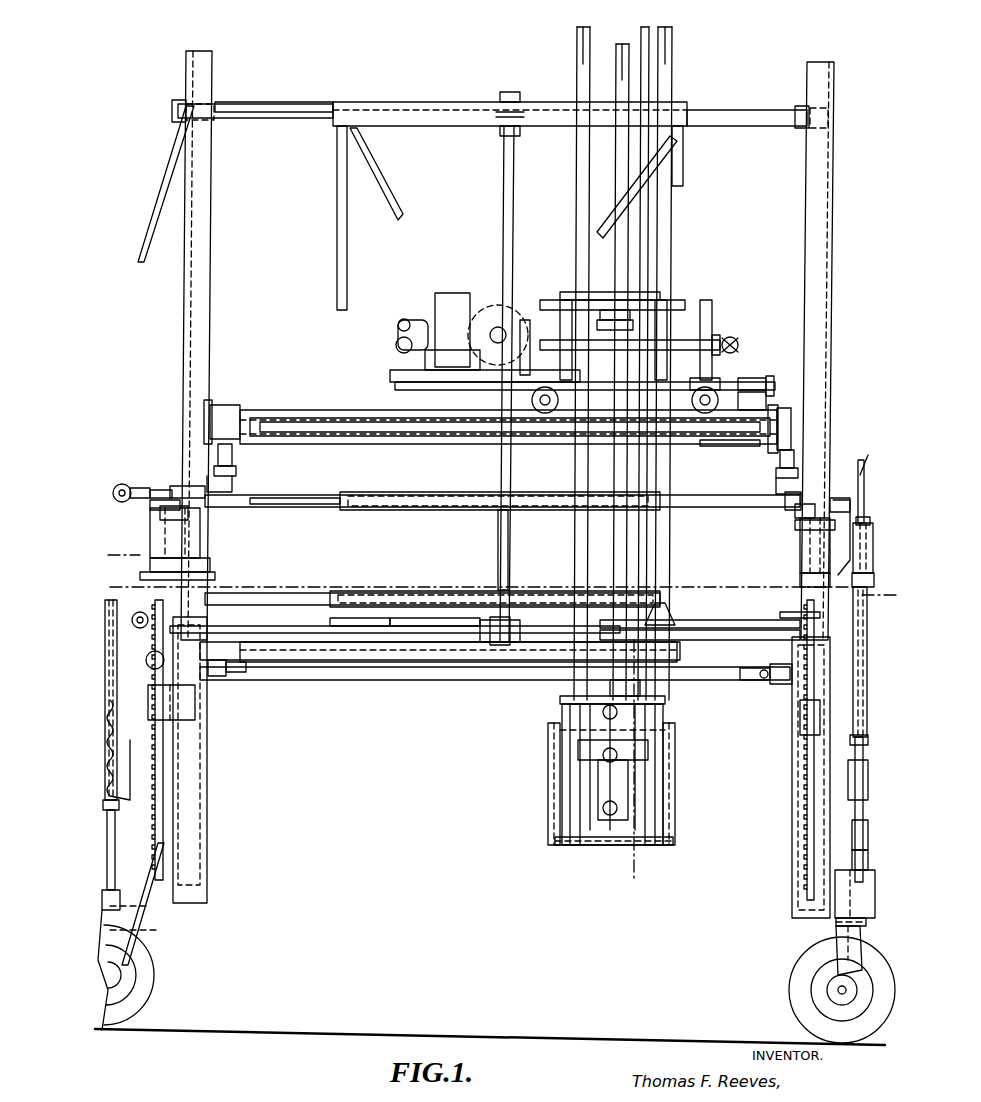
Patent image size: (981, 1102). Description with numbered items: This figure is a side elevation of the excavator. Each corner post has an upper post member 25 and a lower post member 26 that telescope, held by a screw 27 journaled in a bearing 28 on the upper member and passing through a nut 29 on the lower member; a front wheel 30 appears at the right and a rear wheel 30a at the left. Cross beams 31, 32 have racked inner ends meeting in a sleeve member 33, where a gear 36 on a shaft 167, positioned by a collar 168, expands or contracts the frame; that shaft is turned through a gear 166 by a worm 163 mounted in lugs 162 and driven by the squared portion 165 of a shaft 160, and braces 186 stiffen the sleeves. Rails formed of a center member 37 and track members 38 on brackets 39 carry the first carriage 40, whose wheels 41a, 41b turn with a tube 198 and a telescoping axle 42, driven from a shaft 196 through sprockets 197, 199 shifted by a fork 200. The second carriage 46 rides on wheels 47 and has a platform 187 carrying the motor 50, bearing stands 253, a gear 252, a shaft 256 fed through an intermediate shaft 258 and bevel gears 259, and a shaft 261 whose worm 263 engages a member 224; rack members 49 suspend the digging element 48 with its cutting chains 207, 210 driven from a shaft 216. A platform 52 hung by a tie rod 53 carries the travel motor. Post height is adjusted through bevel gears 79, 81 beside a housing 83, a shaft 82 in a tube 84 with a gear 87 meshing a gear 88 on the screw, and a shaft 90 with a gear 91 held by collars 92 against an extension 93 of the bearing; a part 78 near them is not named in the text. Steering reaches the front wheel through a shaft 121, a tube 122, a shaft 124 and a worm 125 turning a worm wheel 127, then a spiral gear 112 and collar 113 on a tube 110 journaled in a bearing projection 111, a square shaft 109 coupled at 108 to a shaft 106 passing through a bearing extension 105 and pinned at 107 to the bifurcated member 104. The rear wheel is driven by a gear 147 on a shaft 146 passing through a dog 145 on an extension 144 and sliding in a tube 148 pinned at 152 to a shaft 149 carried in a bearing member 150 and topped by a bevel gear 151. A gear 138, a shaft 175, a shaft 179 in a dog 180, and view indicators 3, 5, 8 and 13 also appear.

The section line 3 is at (118, 550).
The section line 5 is at (890, 590).
The section line 8- 8 is at (390, 510).
The center line 13 is at (652, 684).
The upper post member 25 is at (186, 316).
The lower post member 26 is at (207, 768).
The screw 27 is at (163, 740).
The bearing 28 is at (200, 540).
The nut 29 is at (195, 702).
The front wheel 30 is at (789, 985).
The rear wheel 30a is at (158, 972).
The cross beam 31 is at (760, 118).
The cross beam 32 is at (322, 103).
The sleeve member 33 is at (466, 102).
The gear 36 is at (520, 128).
The center rail member 37 is at (232, 452).
The track members 38 is at (236, 470).
The brackets 39 is at (780, 480).
The first carriage 40 is at (318, 410).
The flanged wheel 41a is at (792, 420).
The flanged wheel 41b is at (226, 405).
The telescoping axle 42 is at (426, 444).
The second carriage 46 is at (703, 380).
The wheels 47 is at (532, 402).
The digging element 48 is at (548, 796).
The rack members 49 is at (574, 538).
The motor 50 is at (448, 293).
The platform 52 is at (118, 793).
The tie rod 53 is at (160, 190).
The link 78 is at (185, 488).
The bevel gear 79 is at (122, 484).
The bevel gear 81 is at (138, 488).
The shaft 82 is at (340, 494).
The housing 83 is at (180, 504).
The tube 84 is at (430, 510).
The gear 87 is at (160, 490).
The gears 88 is at (200, 518).
The shaft 90 is at (716, 504).
The gear 91 is at (788, 510).
The collars 92 is at (840, 498).
The extension 93 is at (832, 546).
The bifurcated member 104 is at (838, 958).
The bearing extension 105 is at (830, 910).
The shaft 106 is at (852, 870).
The pin 107 is at (836, 922).
The coupling 108 is at (852, 830).
The square shaft 109 is at (858, 465).
The tube 110 is at (852, 740).
The bearing projection 111 is at (873, 530).
The spiral gear 112 is at (870, 600).
The collar 113 is at (863, 520).
The shaft 121 is at (352, 586).
The tube 122 is at (410, 594).
The shaft 124 is at (705, 628).
The worm 125 is at (800, 618).
The worm wheel 127 is at (800, 580).
The gear 138 is at (210, 565).
The extension 144 is at (150, 918).
The dog 145 is at (152, 870).
The shaft 146 is at (115, 840).
The gear 147 is at (160, 946).
The tube 148 is at (119, 805).
The shaft 149 is at (146, 660).
The bearing member 150 is at (138, 628).
The bevel gear 151 is at (215, 576).
The pin connection 152 is at (130, 700).
The shaft 160 is at (275, 627).
The lugs 162 is at (480, 625).
The worm 163 is at (226, 676).
The squared portion 165 is at (360, 627).
The gear 166 is at (510, 630).
The shaft 167 is at (498, 556).
The collar 168 is at (512, 92).
The shaft 175 is at (246, 670).
The shaft 179 is at (660, 690).
The dog 180 is at (752, 682).
The braces 186 is at (400, 222).
The platform 187 is at (760, 378).
The shaft 196 is at (440, 390).
The sprocket 197 is at (774, 385).
The tube 198 is at (485, 444).
The sprocket 199 is at (766, 400).
The fork 200 is at (720, 446).
The cutting chains 207 is at (548, 830).
The cutting chains 210 is at (600, 845).
The shaft 216 is at (688, 215).
The member 224 is at (612, 540).
The gear 252 is at (485, 305).
The bearing stands 253 is at (690, 300).
The shaft 256 is at (600, 318).
The intermediate shaft 258 is at (731, 337).
The bevel gears 259 is at (716, 335).
The shaft 261 is at (592, 292).
The worm 263 is at (600, 300).